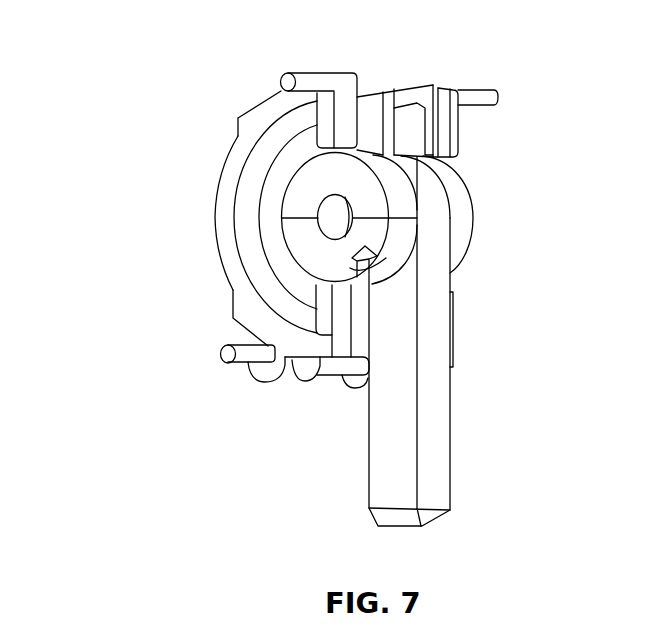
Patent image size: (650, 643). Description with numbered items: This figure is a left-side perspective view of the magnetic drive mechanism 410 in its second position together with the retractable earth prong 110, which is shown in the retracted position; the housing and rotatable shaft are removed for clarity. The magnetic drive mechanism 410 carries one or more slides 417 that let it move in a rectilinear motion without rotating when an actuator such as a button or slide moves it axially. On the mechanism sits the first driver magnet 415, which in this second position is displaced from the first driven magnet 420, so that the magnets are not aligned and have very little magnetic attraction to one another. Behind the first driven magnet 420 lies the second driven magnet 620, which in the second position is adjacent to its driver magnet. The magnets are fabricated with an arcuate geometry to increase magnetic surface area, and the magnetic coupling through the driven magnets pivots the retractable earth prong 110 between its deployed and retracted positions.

The magnetic drive mechanism 410 is at (142, 320).
The first driver magnet 415 is at (243, 213).
The slides 417 is at (313, 84).
The first driven magnet 420 is at (313, 182).
The second driven magnet 620 is at (457, 220).
The retractable earth prong 110 is at (433, 486).